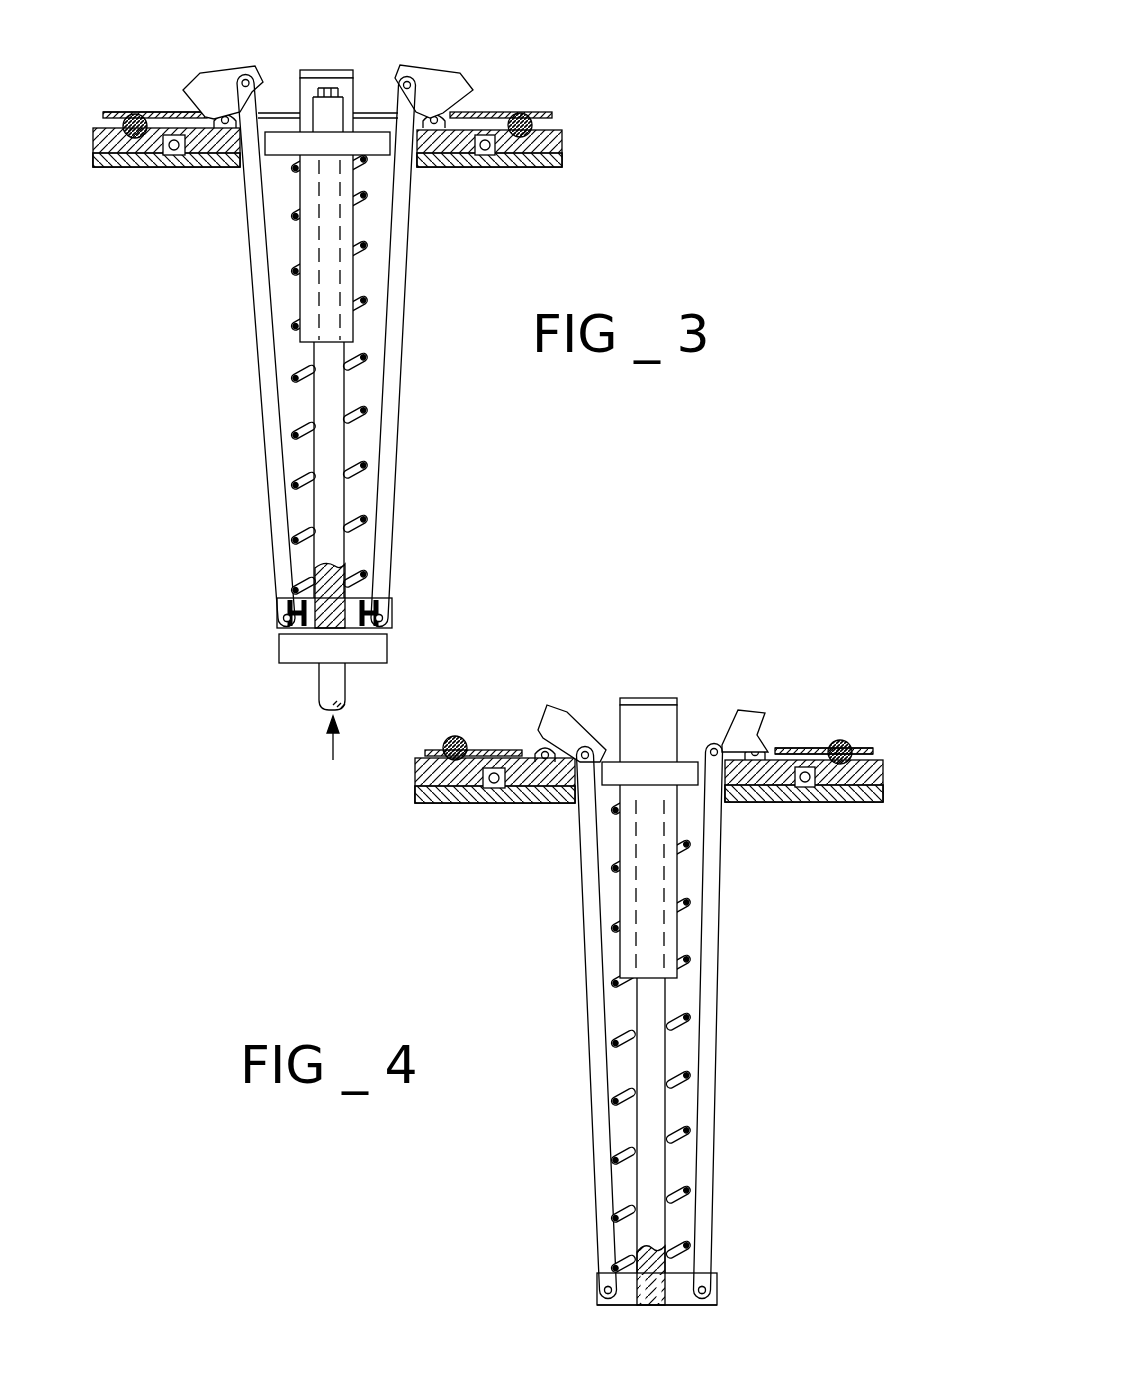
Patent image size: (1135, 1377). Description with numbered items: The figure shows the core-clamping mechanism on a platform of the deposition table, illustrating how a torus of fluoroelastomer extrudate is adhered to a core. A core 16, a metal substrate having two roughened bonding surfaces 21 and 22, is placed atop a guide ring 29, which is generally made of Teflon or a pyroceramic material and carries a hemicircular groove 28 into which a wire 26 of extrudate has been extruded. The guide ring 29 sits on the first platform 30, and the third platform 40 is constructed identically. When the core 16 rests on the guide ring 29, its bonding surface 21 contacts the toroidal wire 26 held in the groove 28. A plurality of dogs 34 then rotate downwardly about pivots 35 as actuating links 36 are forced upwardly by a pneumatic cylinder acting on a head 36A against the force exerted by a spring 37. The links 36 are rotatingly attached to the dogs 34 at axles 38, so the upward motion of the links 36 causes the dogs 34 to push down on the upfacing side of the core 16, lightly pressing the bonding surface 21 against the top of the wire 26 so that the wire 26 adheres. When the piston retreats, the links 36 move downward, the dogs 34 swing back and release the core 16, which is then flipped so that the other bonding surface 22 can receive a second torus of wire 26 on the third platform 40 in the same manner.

In FIG. 3, the core 16 is at (120, 116).
In FIG. 4, the core 16 is at (872, 754).
In FIG. 3, the roughened bonding surface 21 is at (560, 120).
In FIG. 4, the roughened bonding surface 21 is at (868, 750).
In FIG. 3, the roughened bonding surface 22 is at (540, 112).
In FIG. 4, the roughened bonding surface 22 is at (880, 780).
In FIG. 3, the wire 26 is at (520, 137).
In FIG. 4, the wire 26 is at (846, 742).
In FIG. 3, the hemicircular groove 28 is at (133, 138).
In FIG. 4, the hemicircular groove 28 is at (455, 760).
In FIG. 3, the guide ring 29 is at (565, 148).
In FIG. 4, the guide ring 29 is at (884, 775).
In FIG. 3, the first platform 30 is at (468, 168).
In FIG. 3, the dog 34 is at (203, 72).
In FIG. 4, the dog 34 is at (750, 706).
In FIG. 3, the pivot 35 is at (224, 126).
In FIG. 4, the pivot 35 is at (758, 752).
In FIG. 3, the actuating link 36 is at (258, 382).
In FIG. 4, the actuating link 36 is at (722, 1048).
In FIG. 3, the head 36A is at (279, 648).
In FIG. 4, the head 36A is at (600, 1305).
In FIG. 3, the spring 37 is at (368, 408).
In FIG. 4, the spring 37 is at (690, 1130).
In FIG. 3, the axle 38 is at (252, 80).
In FIG. 4, the axle 38 is at (714, 744).
In FIG. 4, the third platform 40 is at (776, 804).